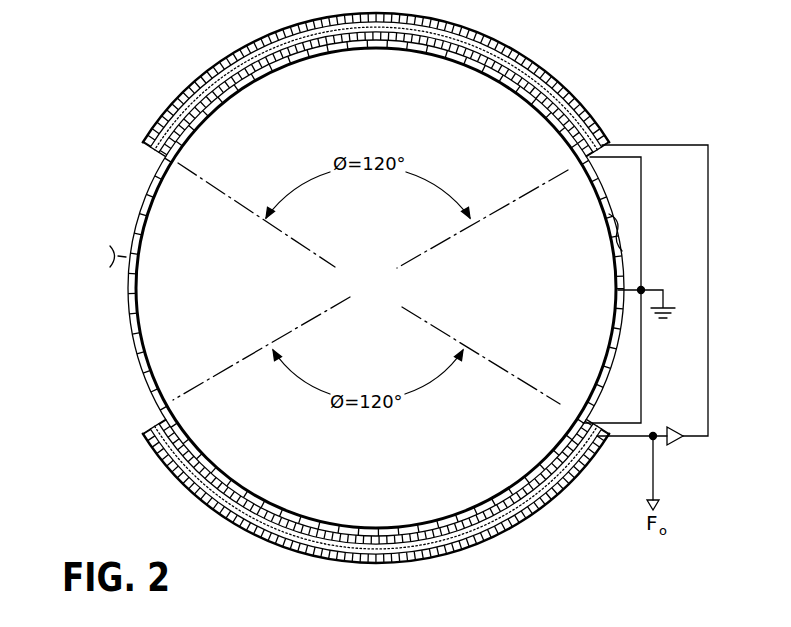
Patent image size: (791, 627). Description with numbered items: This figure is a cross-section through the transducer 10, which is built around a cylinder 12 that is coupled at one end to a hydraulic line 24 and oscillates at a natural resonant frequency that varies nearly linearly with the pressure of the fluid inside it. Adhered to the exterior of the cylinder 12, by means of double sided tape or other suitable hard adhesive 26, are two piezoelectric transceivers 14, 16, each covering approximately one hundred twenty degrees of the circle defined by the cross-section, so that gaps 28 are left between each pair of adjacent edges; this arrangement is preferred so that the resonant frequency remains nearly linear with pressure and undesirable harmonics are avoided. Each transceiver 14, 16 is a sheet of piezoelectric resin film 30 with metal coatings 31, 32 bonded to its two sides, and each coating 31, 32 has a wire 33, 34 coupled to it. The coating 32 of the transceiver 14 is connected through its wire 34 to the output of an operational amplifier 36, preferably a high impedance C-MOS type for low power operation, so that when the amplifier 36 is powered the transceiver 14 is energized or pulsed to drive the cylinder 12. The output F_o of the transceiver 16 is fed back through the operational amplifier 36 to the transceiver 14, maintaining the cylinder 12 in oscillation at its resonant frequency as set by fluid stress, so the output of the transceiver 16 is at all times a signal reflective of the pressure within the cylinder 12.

The transducer 10 is at (59, 388).
The cylinder 12 is at (137, 257).
The transceiver 14 is at (522, 44).
The transceiver 16 is at (308, 565).
The hydraulic line 24 is at (43, 6).
The adhesive 26 is at (470, 57).
The gap 28 is at (603, 242).
The piezoelectric resin film 30 is at (568, 140).
The metal coating 31 is at (543, 102).
The metal coating 32 is at (568, 101).
The wire 33 is at (642, 162).
The wire 34 is at (650, 145).
The operational amplifier 36 is at (678, 446).